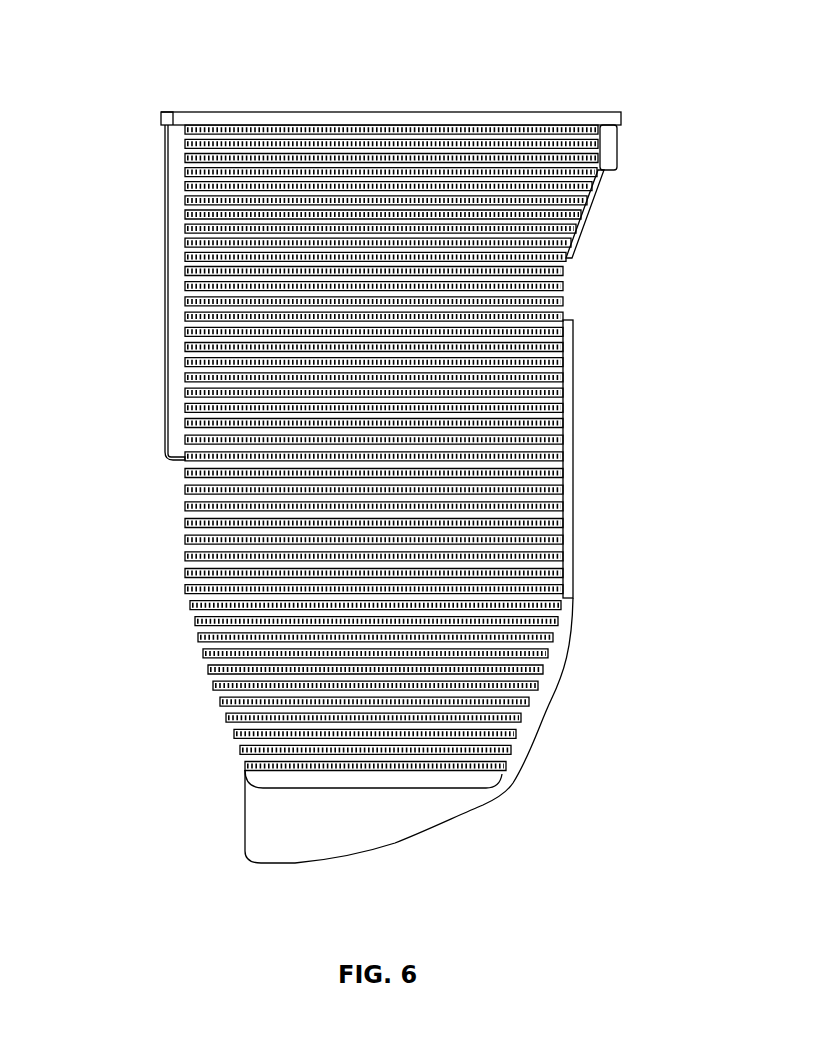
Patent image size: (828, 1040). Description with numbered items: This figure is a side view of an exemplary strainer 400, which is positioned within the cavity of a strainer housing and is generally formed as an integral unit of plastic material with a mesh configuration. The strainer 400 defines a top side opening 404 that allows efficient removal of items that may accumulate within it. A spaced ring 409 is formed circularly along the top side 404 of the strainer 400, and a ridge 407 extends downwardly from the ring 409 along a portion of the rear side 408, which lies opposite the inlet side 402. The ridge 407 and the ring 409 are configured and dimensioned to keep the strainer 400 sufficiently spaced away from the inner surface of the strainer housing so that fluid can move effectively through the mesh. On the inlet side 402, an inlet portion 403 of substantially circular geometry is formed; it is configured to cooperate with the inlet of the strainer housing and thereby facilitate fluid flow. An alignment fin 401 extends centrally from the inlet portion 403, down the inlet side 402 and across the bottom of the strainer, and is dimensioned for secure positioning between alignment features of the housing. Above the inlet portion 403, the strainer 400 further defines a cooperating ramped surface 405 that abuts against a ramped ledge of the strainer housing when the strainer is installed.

The strainer 400 is at (178, 57).
The alignment fin 401 is at (300, 843).
The inlet side 402 is at (630, 400).
The inlet portion 403 is at (568, 470).
The top side opening 404 is at (372, 100).
The cooperating ramped surface 405 is at (580, 207).
The ridge 407 is at (168, 274).
The rear side 408 is at (125, 490).
The spaced ring 409 is at (160, 110).